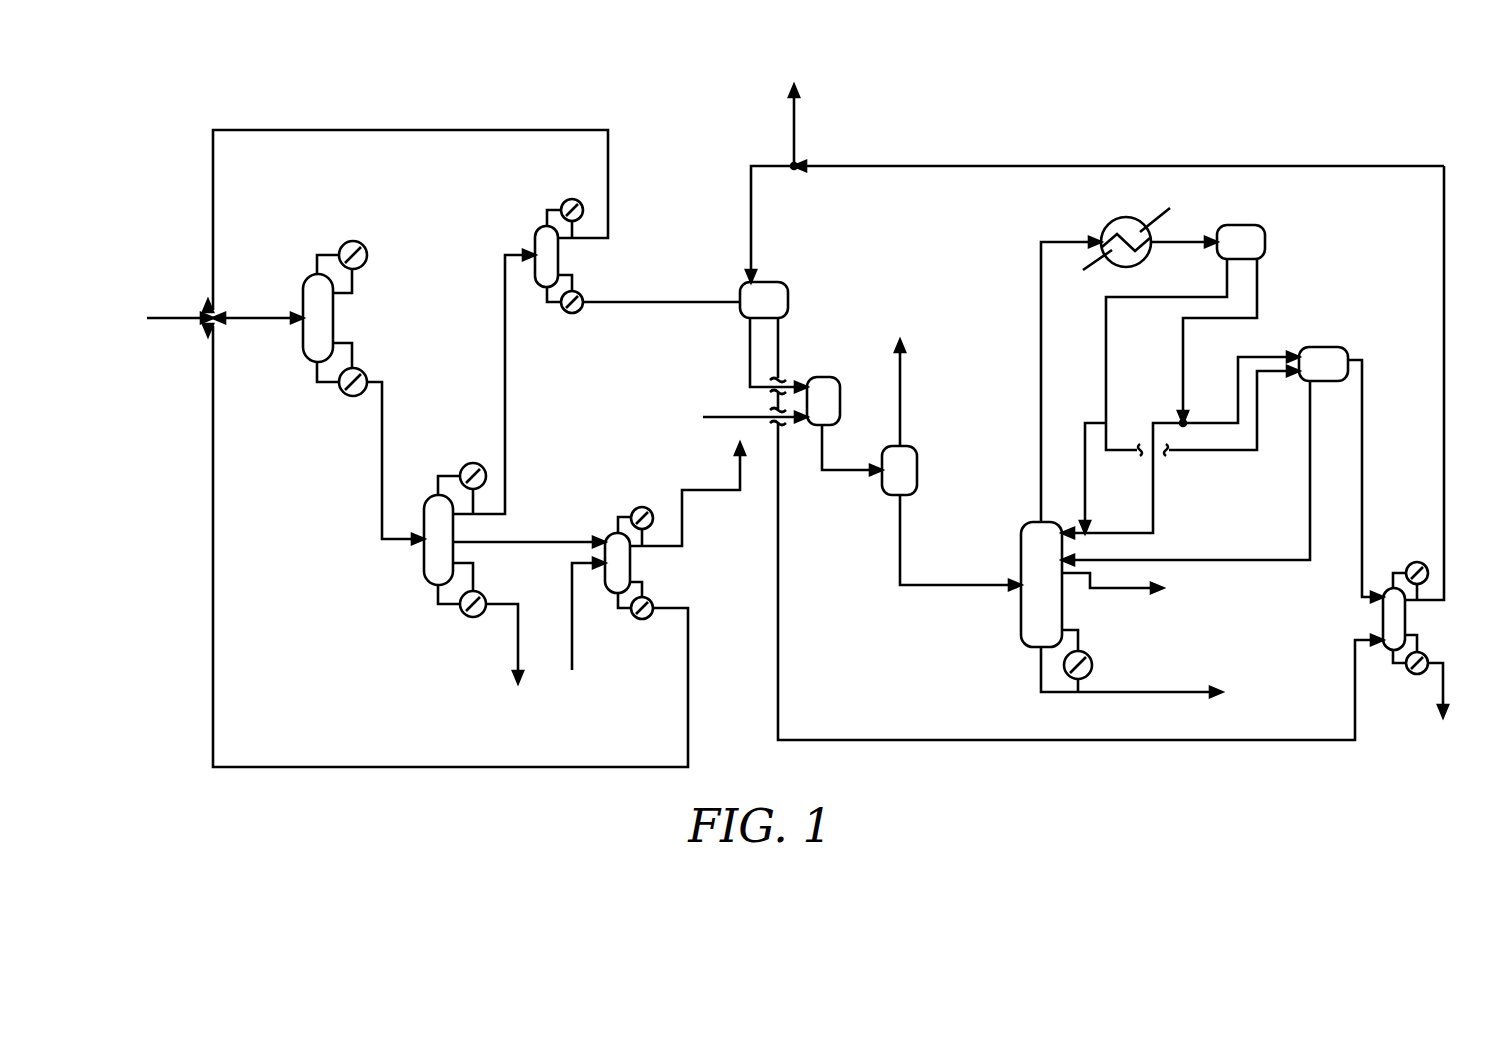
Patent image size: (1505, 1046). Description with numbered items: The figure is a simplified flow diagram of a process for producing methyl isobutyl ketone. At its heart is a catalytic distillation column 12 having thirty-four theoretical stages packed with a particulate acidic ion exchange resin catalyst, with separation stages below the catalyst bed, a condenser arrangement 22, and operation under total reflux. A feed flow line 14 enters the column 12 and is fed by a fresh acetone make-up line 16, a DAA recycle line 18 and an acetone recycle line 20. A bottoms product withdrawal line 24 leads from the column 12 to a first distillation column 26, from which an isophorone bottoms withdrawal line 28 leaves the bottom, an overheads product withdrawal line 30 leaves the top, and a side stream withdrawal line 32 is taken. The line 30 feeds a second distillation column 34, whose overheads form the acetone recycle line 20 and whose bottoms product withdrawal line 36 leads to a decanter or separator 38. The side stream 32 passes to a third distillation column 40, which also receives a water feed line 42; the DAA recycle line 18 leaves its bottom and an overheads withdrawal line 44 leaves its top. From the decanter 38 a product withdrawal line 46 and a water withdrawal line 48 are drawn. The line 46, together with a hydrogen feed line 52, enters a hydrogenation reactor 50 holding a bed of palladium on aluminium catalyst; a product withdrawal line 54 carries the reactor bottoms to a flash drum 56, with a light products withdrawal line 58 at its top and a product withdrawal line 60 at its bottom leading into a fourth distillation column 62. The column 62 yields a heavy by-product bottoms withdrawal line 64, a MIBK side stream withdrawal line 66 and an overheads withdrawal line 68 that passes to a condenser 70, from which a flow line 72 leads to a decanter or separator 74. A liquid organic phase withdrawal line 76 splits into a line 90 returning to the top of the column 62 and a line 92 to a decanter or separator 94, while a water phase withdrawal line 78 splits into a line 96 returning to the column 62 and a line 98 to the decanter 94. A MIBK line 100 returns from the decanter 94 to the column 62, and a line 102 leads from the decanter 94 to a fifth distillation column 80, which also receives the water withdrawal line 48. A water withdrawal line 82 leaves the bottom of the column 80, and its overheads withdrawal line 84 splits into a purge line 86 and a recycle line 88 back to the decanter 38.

The catalytic distillation column 12 is at (313, 293).
The feed flow line 14 is at (250, 320).
The fresh acetone make-up line 16 is at (148, 318).
The DAA recycle line 18 is at (213, 438).
The acetone recycle line 20 is at (213, 217).
The condenser arrangement 22 is at (353, 241).
The bottoms product withdrawal line 24 is at (382, 432).
The first distillation column 26 is at (433, 552).
The isophorone bottoms withdrawal line 28 is at (517, 627).
The overheads product withdrawal line 30 is at (505, 405).
The side stream withdrawal line 32 is at (573, 540).
The second distillation column 34 is at (540, 242).
The bottoms product withdrawal line 36 is at (702, 300).
The decanter or separator 38 is at (770, 295).
The third distillation column 40 is at (633, 563).
The water feed line 42 is at (573, 604).
The overheads withdrawal line 44 is at (682, 502).
The product withdrawal line 46 is at (750, 370).
The water withdrawal line 48 is at (779, 530).
The hydrogenation reactor 50 is at (822, 398).
The hydrogen feed line 52 is at (712, 417).
The product withdrawal line 54 is at (820, 448).
The flash drum 56 is at (918, 477).
The light products withdrawal line 58 is at (902, 398).
The product withdrawal line 60 is at (930, 585).
The fourth distillation column 62 is at (1027, 615).
The heavy by-product bottoms withdrawal line 64 is at (1097, 693).
The MIBK side stream withdrawal line 66 is at (1115, 588).
The overheads withdrawal line 68 is at (1041, 325).
The condenser 70 is at (1127, 218).
The flow line 72 is at (1178, 240).
The decanter or separator 74 is at (1258, 243).
The liquid organic phase withdrawal line 76 is at (1123, 298).
The water phase withdrawal line 78 is at (1258, 287).
The fifth distillation column 80 is at (1392, 622).
The water withdrawal line 82 is at (1443, 683).
The overheads withdrawal line 84 is at (1444, 385).
The purge line 86 is at (795, 132).
The recycle line 88 is at (751, 217).
The line 90 is at (1082, 465).
The line 92 is at (1222, 452).
The decanter or separator 94 is at (1327, 363).
The line 96 is at (1153, 467).
The line 98 is at (1262, 357).
The MIBK line 100 is at (1225, 562).
The line 102 is at (1363, 427).